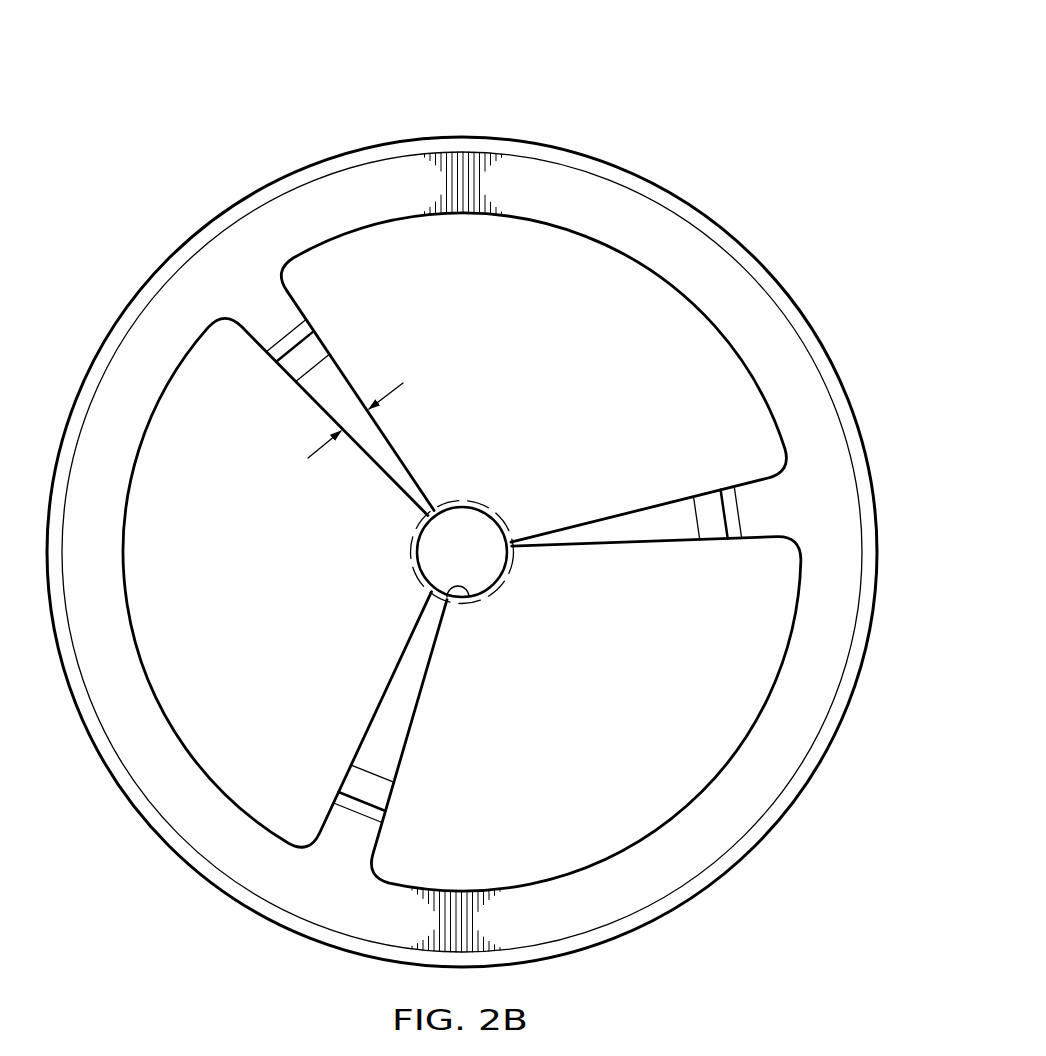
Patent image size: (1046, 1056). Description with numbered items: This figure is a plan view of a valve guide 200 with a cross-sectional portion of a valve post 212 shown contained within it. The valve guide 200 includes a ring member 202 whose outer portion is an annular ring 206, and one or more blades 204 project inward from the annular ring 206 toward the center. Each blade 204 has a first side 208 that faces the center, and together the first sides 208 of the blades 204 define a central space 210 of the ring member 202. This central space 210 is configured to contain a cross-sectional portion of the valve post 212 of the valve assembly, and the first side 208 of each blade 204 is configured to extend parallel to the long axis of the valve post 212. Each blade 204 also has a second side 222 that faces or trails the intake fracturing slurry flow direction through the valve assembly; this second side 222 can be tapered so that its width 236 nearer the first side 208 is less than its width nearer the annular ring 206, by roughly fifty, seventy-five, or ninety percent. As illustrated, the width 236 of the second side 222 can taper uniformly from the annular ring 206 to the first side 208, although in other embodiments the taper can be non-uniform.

The valve guide 200 is at (303, 81).
The ring member 202 is at (699, 169).
The blades 204 is at (357, 366).
The annular ring 206 is at (413, 140).
The first side 208 is at (472, 599).
The central space 210 is at (392, 545).
The valve post 212 is at (433, 562).
The second side 222 is at (325, 389).
The width 236 is at (404, 384).